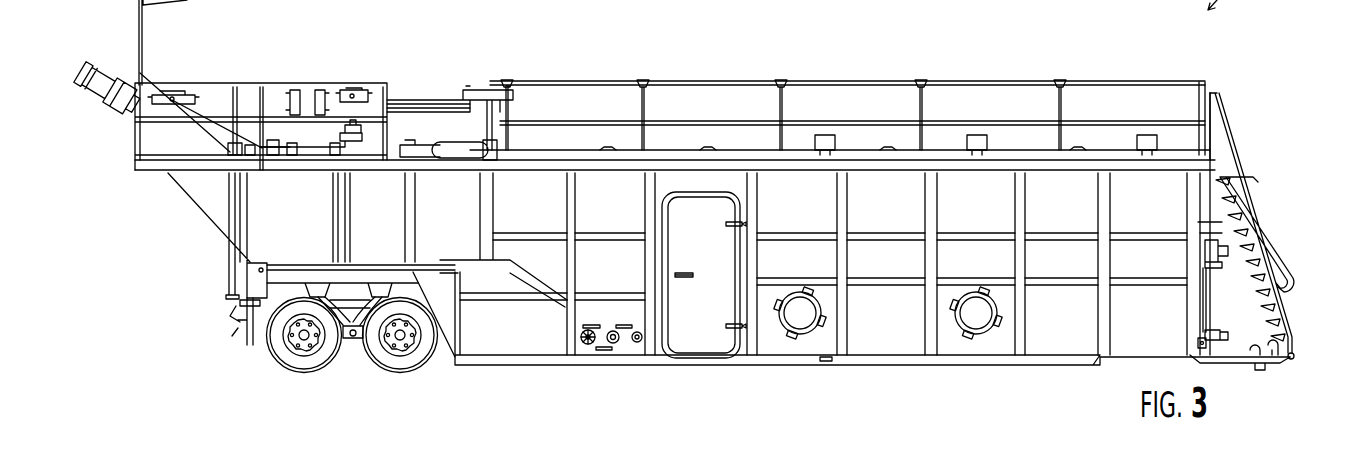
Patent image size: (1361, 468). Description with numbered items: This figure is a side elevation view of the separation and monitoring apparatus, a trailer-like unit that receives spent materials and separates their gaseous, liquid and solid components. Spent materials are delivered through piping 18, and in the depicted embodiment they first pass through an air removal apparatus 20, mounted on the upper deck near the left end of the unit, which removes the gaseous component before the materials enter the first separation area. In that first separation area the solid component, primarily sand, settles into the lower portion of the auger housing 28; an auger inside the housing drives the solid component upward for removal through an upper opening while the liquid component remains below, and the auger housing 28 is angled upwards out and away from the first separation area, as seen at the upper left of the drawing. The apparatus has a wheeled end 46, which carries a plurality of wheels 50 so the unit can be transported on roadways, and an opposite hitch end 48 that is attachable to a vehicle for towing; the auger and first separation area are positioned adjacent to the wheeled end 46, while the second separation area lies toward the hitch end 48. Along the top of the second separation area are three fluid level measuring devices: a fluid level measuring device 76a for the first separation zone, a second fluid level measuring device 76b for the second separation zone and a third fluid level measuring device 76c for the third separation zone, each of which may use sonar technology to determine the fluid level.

The piping 18 is at (270, 148).
The air removal apparatus 20 is at (425, 113).
The auger housing 28 is at (203, 117).
The wheeled end 46 is at (250, 283).
The hitch end 48 is at (1294, 355).
The wheels 50 is at (398, 372).
The fluid level measuring device 76a is at (827, 137).
The second fluid level measuring device 76b is at (977, 135).
The third fluid level measuring device 76c is at (1145, 135).